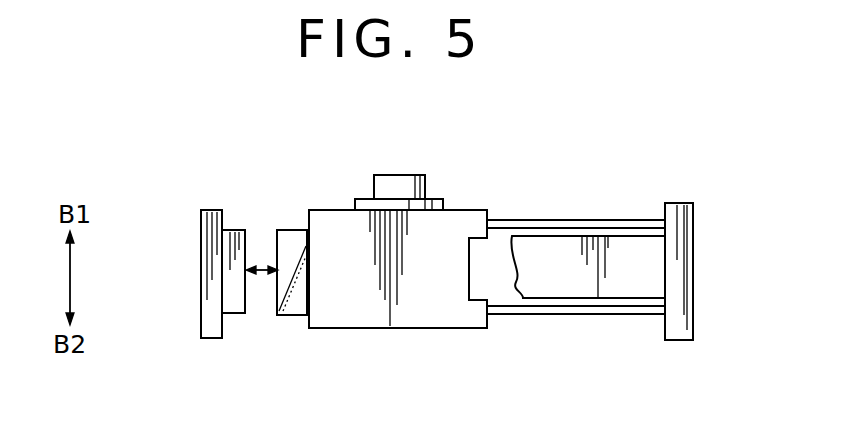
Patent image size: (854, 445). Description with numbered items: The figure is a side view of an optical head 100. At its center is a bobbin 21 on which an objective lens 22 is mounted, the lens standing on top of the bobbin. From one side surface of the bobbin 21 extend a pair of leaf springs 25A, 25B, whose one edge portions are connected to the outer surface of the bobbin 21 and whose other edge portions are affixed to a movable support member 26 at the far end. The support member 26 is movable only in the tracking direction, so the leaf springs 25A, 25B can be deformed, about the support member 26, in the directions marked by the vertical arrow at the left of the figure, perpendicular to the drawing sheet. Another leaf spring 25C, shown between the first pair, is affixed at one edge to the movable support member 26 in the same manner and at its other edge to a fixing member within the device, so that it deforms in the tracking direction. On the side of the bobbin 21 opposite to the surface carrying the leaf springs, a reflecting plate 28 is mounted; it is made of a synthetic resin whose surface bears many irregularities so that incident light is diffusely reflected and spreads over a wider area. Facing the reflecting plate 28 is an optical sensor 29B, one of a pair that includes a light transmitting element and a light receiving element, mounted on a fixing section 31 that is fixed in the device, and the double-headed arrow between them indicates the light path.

The optical head 100 is at (700, 129).
The bobbin 21 is at (373, 313).
The objective lens 22 is at (393, 186).
The leaf spring 25A is at (585, 222).
The leaf spring 25B is at (555, 312).
The leaf spring 25C is at (530, 250).
The movable support member 26 is at (688, 275).
The reflecting plate 28 is at (292, 242).
The optical sensor 29B is at (236, 313).
The fixing section 31 is at (200, 261).